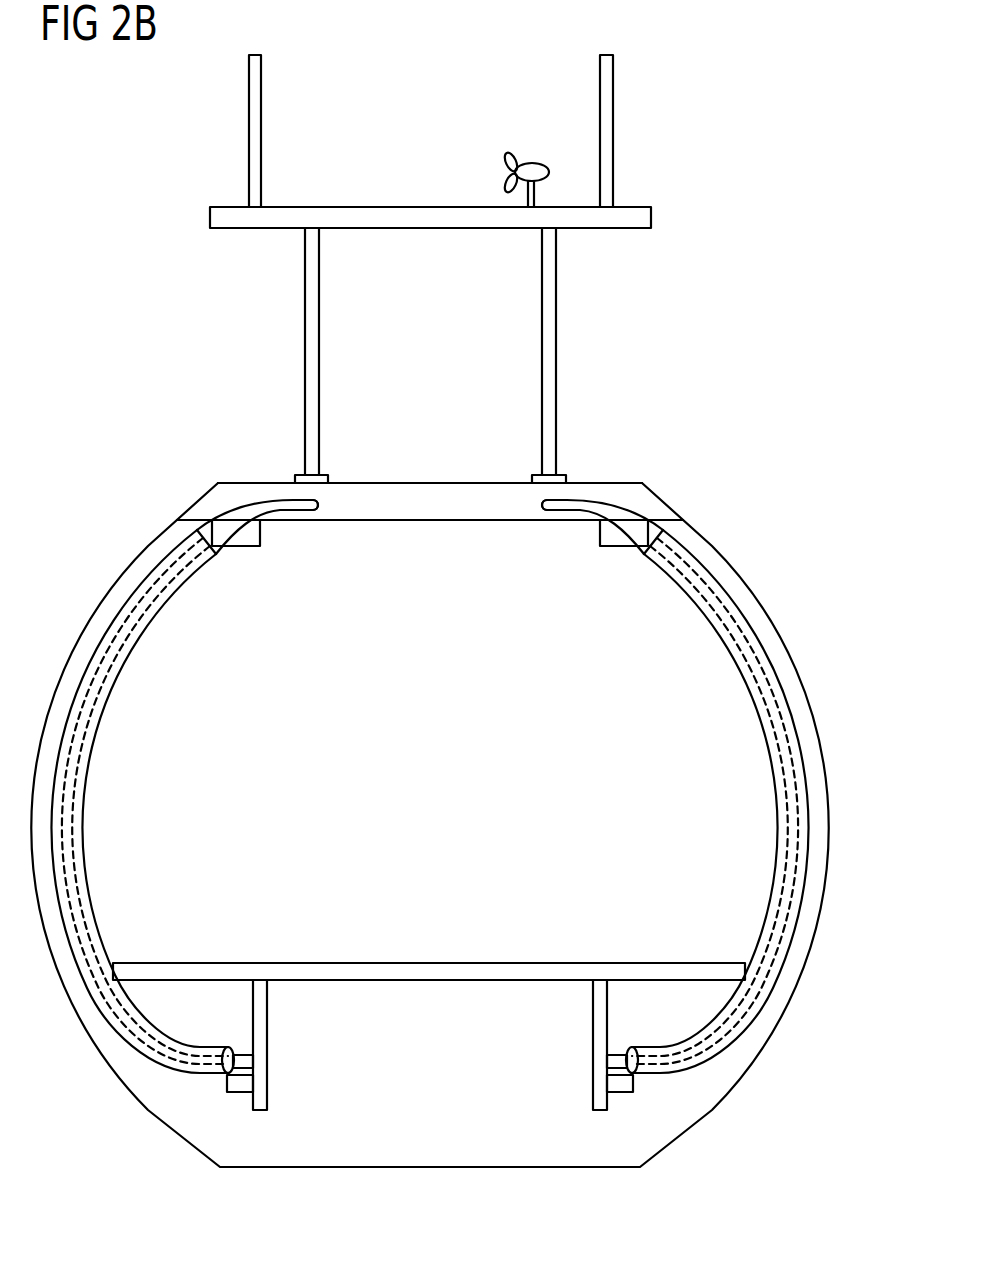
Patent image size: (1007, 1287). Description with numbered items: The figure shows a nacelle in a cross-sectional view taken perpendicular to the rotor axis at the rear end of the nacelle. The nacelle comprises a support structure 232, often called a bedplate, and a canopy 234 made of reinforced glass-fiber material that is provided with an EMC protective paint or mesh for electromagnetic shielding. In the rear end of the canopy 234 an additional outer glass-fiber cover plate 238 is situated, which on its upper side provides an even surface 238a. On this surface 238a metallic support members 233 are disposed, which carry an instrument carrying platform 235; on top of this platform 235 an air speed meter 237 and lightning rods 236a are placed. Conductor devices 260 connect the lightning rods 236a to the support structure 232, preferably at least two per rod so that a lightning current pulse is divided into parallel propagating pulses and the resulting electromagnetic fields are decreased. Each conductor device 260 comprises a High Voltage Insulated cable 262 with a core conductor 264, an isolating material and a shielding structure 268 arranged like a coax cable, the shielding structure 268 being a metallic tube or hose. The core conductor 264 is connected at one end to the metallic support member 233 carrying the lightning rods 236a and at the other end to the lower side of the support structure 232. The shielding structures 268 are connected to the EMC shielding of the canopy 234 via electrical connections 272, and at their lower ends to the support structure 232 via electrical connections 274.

The support structure 232 is at (697, 962).
The metallic support member 233 is at (319, 305).
The canopy 234 is at (728, 556).
The instrument carrying platform 235 is at (651, 216).
The lightning rod 236a is at (262, 91).
The air speed meter 237 is at (530, 164).
The outer glass-fiber cover plate 238 is at (585, 482).
The even surface 238a is at (428, 482).
The conductor device 260 is at (122, 733).
The High Voltage Insulated cable 262 is at (250, 512).
The core conductor 264 is at (320, 500).
The shielding structure 268 is at (128, 655).
The electrical connection 272 is at (236, 548).
The electrical connection 274 is at (240, 1093).